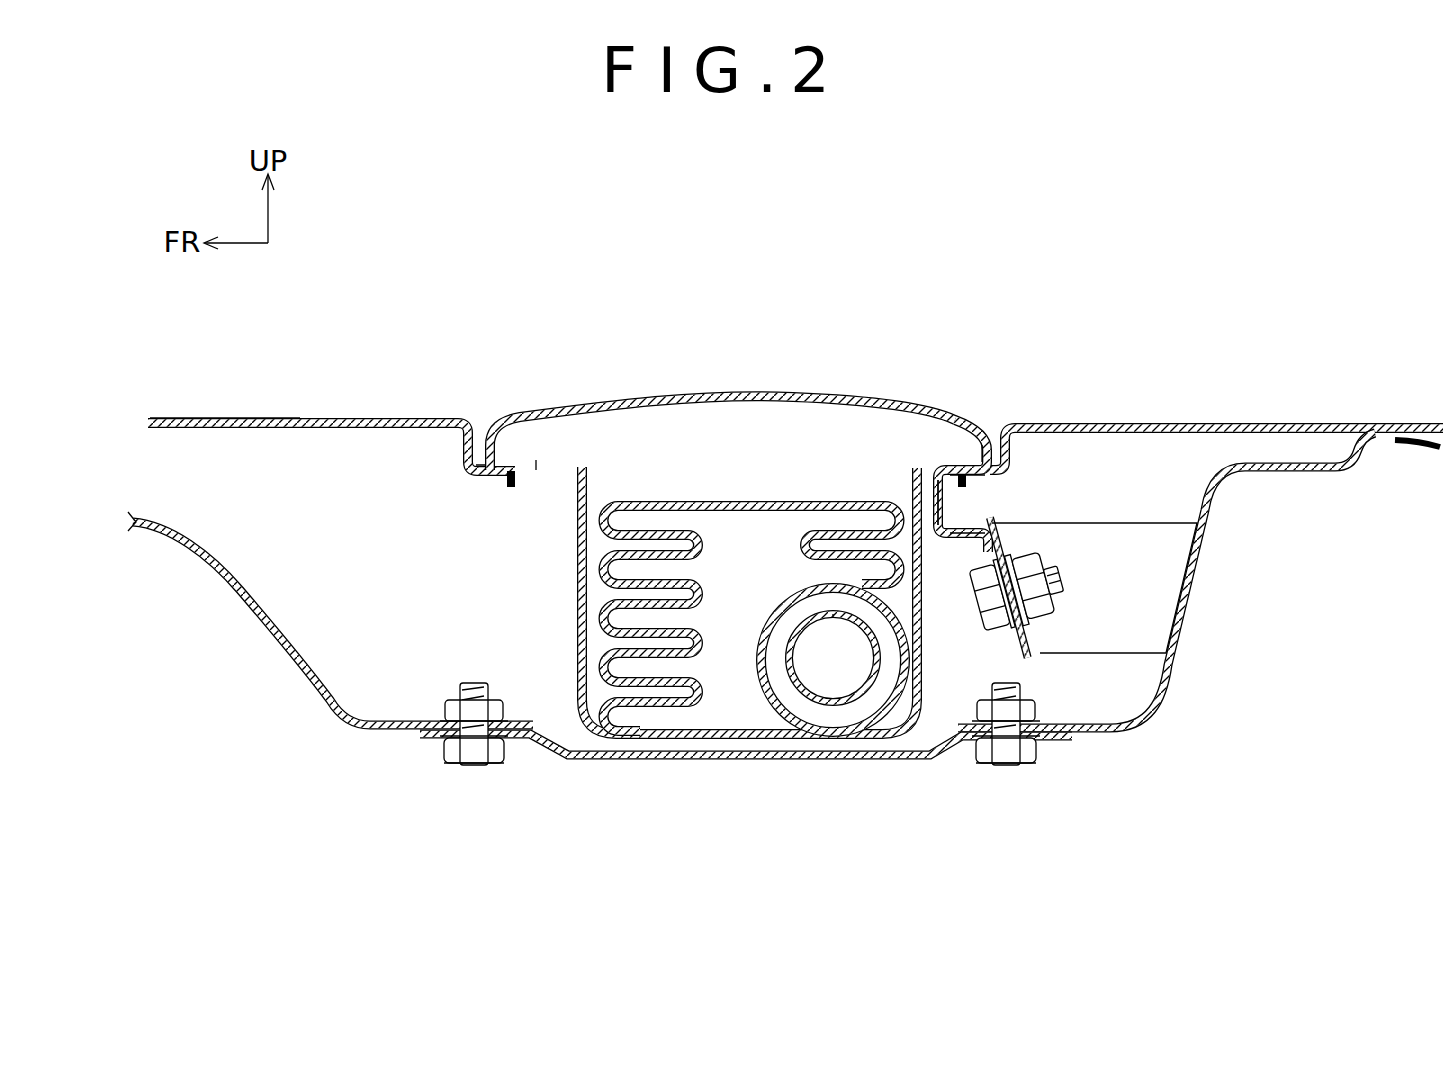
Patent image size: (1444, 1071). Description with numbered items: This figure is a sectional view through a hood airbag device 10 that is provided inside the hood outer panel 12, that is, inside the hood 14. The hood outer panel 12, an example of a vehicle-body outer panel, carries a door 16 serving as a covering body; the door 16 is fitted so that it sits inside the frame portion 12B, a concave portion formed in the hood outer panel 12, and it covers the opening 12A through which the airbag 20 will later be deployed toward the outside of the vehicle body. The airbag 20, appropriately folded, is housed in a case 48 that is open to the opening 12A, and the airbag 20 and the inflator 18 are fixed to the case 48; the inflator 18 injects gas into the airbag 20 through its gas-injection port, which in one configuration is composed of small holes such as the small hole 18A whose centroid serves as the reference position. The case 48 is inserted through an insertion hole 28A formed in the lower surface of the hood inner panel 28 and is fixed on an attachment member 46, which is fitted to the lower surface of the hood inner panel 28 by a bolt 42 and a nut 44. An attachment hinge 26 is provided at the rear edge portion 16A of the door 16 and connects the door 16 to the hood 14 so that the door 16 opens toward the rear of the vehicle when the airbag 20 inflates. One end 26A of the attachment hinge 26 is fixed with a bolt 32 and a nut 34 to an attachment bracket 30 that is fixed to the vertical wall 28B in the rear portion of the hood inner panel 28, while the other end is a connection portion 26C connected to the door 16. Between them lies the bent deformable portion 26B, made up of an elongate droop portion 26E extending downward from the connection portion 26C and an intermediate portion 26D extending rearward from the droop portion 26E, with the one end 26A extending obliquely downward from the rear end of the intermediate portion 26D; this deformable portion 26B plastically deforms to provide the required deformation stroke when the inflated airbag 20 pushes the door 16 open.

The airbag device 10 is at (613, 359).
The hood outer panel 12 is at (300, 418).
The opening 12A is at (538, 467).
The frame portion 12B is at (478, 467).
The hood 14 is at (208, 418).
The door 16 is at (690, 397).
The rear edge portion 16A is at (1000, 428).
The inflator 18 is at (757, 673).
The small hole 18A is at (887, 795).
The airbag 20 is at (750, 500).
The attachment hinge 26 is at (945, 535).
The one end 26A is at (1019, 592).
The deformable portion 26B is at (1098, 452).
The connection portion 26C is at (945, 465).
The intermediate portion 26D is at (950, 512).
The droop portion 26E is at (965, 478).
The hood inner panel 28 is at (751, 620).
The insertion hole 28A is at (940, 720).
The vertical wall 28B is at (1203, 582).
The attachment bracket 30 is at (1177, 513).
The bolt 32 is at (988, 603).
The nut 34 is at (1047, 606).
The bolt 42 is at (473, 765).
The nut 44 is at (447, 705).
The attachment member 46 is at (650, 760).
The case 48 is at (578, 605).